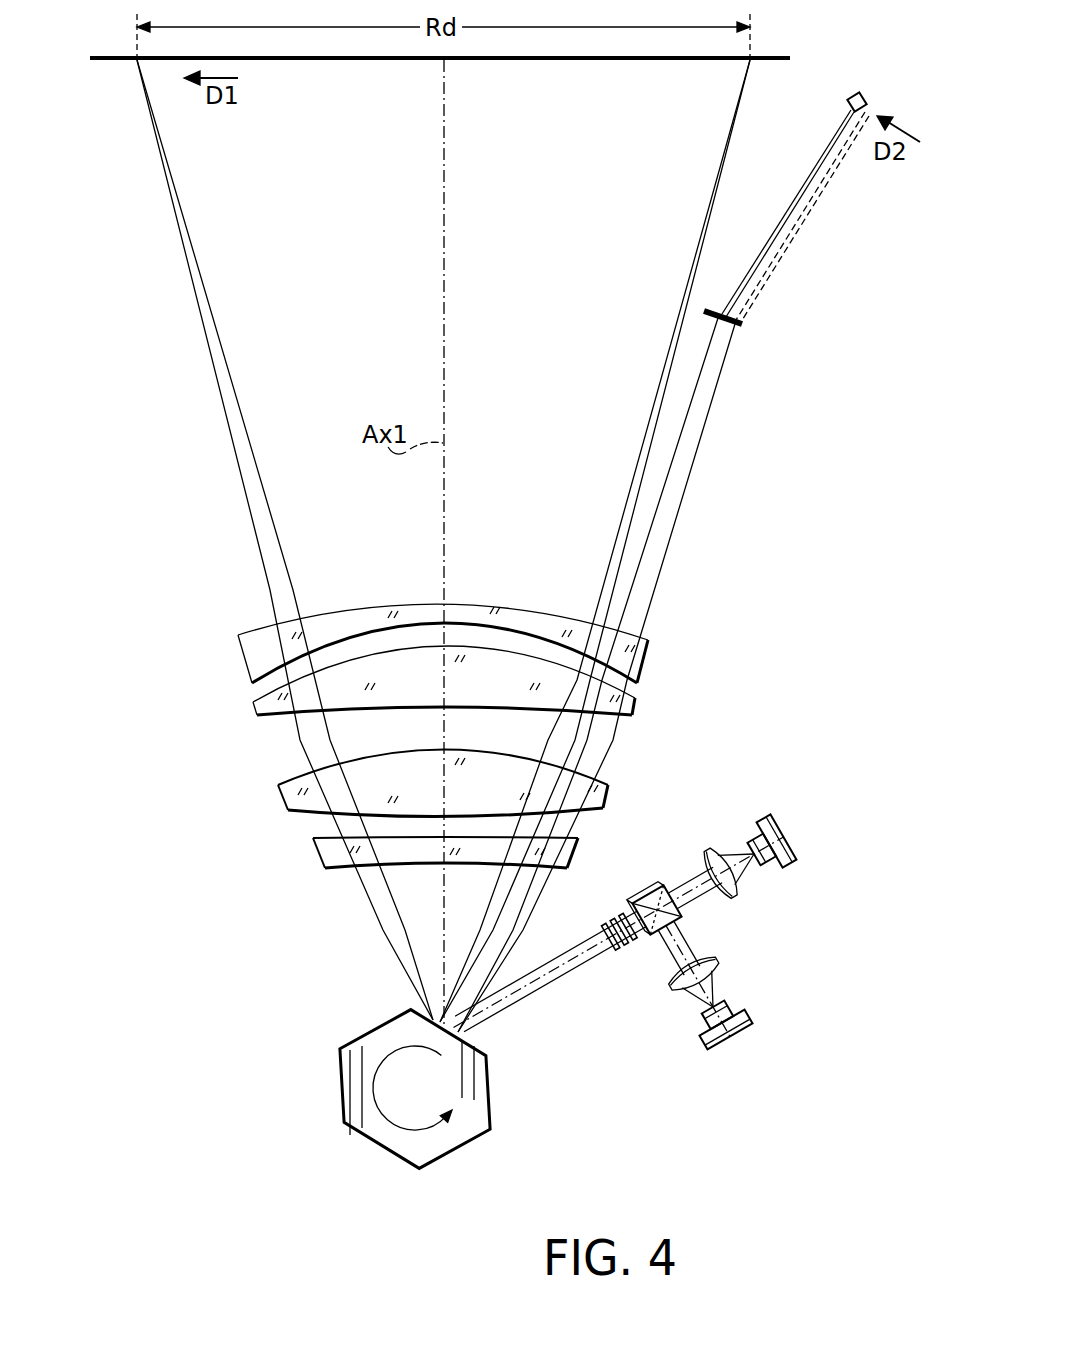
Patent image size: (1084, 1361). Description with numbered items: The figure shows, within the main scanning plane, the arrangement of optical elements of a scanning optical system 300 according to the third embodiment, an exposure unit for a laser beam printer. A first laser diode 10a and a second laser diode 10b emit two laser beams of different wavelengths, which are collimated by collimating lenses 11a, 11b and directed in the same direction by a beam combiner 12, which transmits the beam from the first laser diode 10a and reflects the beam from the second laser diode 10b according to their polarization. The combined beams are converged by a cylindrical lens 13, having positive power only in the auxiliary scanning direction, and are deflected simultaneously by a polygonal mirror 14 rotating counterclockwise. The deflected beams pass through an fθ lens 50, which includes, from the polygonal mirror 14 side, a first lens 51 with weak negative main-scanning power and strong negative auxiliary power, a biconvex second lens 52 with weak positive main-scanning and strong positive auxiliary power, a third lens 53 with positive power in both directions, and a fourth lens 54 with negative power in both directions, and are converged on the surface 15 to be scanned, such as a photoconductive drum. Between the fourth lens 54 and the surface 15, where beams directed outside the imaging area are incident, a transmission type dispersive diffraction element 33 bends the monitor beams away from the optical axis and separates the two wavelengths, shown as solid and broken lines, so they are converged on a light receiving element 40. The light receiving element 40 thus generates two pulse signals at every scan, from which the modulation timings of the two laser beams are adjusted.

The first laser diode 10a is at (783, 840).
The second laser diode 10b is at (728, 1040).
The collimating lens 11a is at (742, 893).
The collimating lens 11b is at (712, 972).
The beam combiner 12 is at (660, 903).
The cylindrical lens 13 is at (630, 957).
The polygonal mirror 14 is at (362, 1093).
The surface to be scanned 15 is at (774, 62).
The dispersive diffraction element 33 is at (745, 318).
The light receiving element 40 is at (857, 93).
The fθ lens 50 is at (392, 768).
The first lens 51 is at (385, 879).
The second lens 52 is at (292, 790).
The third lens 53 is at (272, 705).
The fourth lens 54 is at (262, 651).
The scanning optical system 300 is at (784, 587).